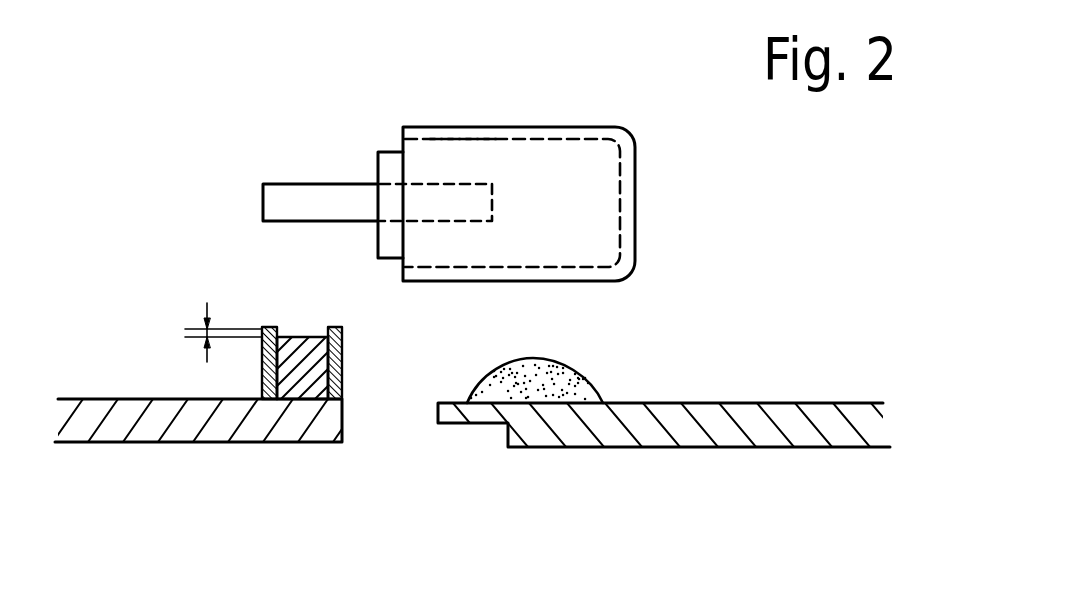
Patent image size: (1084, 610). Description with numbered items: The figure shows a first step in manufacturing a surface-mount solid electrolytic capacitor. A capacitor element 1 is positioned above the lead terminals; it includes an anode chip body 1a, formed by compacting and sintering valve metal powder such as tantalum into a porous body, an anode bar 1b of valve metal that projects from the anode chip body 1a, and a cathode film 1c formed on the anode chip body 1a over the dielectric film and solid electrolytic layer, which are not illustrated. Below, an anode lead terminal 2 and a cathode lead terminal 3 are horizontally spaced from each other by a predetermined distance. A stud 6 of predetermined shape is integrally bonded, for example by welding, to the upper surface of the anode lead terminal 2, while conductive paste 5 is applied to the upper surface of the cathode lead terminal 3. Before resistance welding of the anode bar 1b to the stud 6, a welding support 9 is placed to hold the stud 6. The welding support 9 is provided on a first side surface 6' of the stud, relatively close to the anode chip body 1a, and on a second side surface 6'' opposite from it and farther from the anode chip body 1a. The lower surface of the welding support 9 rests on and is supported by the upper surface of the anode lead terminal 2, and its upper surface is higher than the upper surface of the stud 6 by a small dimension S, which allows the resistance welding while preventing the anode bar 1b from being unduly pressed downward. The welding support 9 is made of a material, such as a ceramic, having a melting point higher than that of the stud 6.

The capacitor element 1 is at (523, 118).
The anode chip body 1a is at (592, 193).
The anode bar 1b is at (298, 202).
The cathode film 1c is at (458, 145).
The anode lead terminal 2 is at (108, 437).
The cathode lead terminal 3 is at (717, 423).
The conductive paste 5 is at (567, 388).
The stud 6 is at (312, 451).
The first side surface 6' is at (335, 448).
The second side surface 6'' is at (217, 443).
The welding support 9 is at (262, 362).
The small dimension S is at (216, 319).